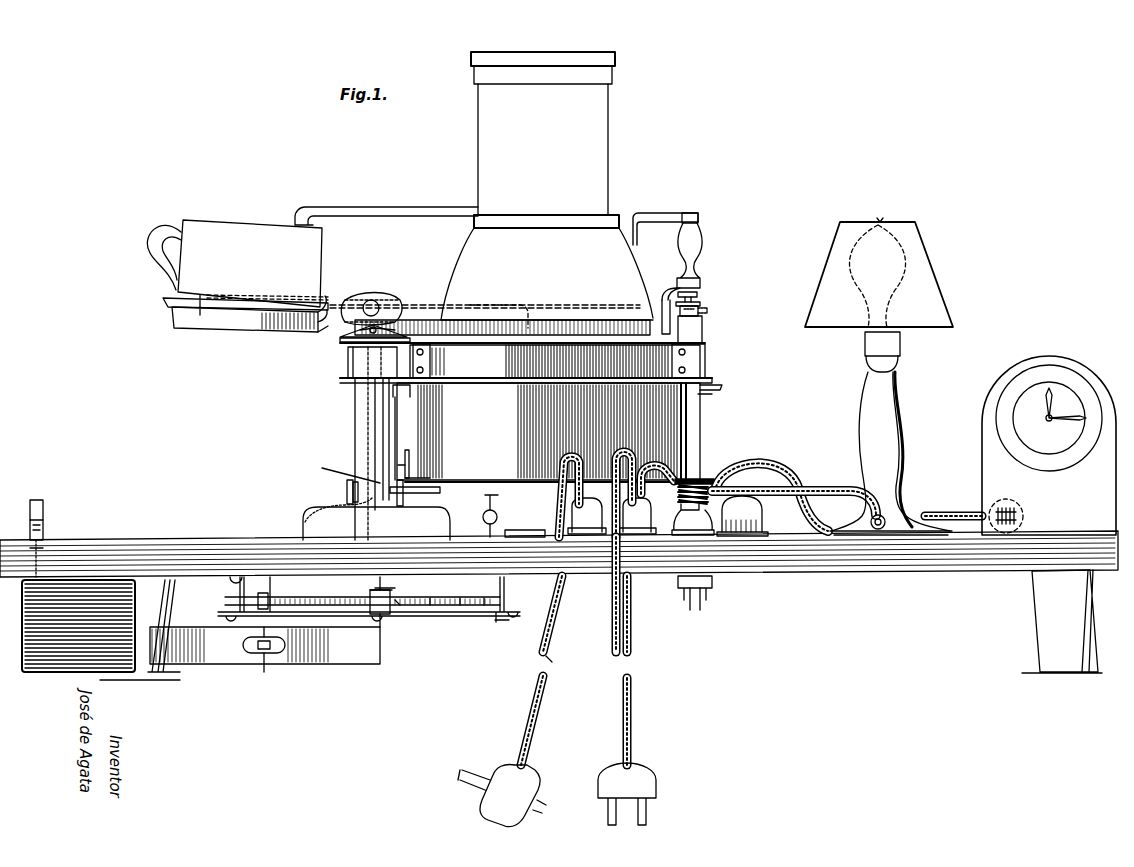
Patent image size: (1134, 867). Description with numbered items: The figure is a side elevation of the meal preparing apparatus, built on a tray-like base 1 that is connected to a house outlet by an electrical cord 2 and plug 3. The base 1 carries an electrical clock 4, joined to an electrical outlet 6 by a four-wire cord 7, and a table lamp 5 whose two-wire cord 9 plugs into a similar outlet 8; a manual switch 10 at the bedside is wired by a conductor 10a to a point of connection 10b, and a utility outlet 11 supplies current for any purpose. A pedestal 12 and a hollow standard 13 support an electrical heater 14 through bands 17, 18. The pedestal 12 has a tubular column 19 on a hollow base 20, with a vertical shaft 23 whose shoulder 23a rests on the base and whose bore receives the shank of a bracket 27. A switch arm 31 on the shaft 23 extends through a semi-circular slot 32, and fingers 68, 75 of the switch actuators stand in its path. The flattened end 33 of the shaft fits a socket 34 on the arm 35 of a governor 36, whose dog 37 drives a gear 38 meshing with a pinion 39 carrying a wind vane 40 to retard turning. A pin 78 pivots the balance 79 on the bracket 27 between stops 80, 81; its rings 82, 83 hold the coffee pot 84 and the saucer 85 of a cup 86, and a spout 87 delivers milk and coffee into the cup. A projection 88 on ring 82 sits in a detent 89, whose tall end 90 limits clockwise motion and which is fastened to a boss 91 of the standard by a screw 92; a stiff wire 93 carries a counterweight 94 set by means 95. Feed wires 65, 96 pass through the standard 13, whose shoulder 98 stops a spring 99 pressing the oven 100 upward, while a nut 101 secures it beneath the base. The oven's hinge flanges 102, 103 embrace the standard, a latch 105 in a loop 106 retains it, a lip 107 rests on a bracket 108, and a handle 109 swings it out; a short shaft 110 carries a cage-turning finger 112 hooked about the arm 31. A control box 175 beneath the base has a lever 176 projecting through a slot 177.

The base 1 is at (138, 550).
The electrical cord 2 is at (622, 595).
The plug 3 is at (648, 772).
The electrical clock 4 is at (990, 475).
The table lamp 5 is at (892, 336).
The electrical outlet 6 is at (766, 528).
The 4-wire cord 7 is at (830, 522).
The electrical outlet 8 is at (648, 535).
The 2-wire cord 9 is at (866, 492).
The manual switch 10 is at (522, 778).
The conductor 10a is at (546, 684).
The point of connection 10b is at (585, 535).
The utility outlet 11 is at (528, 533).
The pedestal 12 is at (348, 431).
The standard 13 is at (700, 430).
The electrical heater 14 is at (690, 348).
The band 17 is at (350, 372).
The band 18 is at (696, 360).
The tubular column 19 is at (354, 412).
The hollow base 20 is at (321, 507).
The vertical shaft 23 is at (366, 392).
The shoulder 23a is at (305, 522).
The bracket 27 is at (348, 344).
The switch arm 31 is at (440, 490).
The semi-circular slot 32 is at (340, 475).
The flattened end 33 is at (378, 590).
The socket 34 is at (388, 594).
The arm 35 is at (432, 606).
The governor 36 is at (398, 607).
The dog 37 is at (486, 606).
The gear 38 is at (462, 606).
The pinion 39 is at (268, 597).
The wind vane 40 is at (312, 655).
The feed wire 65 is at (690, 600).
The finger 68 is at (404, 502).
The finger 75 is at (347, 488).
The pin 78 is at (342, 338).
The balance 79 is at (458, 328).
The stop 80 is at (395, 330).
The stop 81 is at (352, 335).
The ring 82 is at (688, 282).
The ring 83 is at (174, 318).
The coffee pot 84 is at (640, 238).
The saucer 85 is at (168, 302).
The cup 86 is at (190, 268).
The spout 87 is at (370, 198).
The projection 88 is at (704, 310).
The detent 89 is at (698, 294).
The tall end 90 is at (670, 303).
The boss 91 is at (702, 330).
The screw 92 is at (700, 304).
The stiff wire 93 is at (500, 305).
The counterweight 94 is at (368, 297).
The setting means 95 is at (378, 300).
The feed wire 96 is at (700, 602).
The shoulder 98 is at (700, 528).
The spring 99 is at (705, 480).
The oven 100 is at (690, 414).
The nut 101 is at (735, 535).
The hinge flange 102 is at (708, 378).
The hinge flange 103 is at (712, 480).
The latch 105 is at (722, 387).
The loop 106 is at (712, 394).
The lip 107 is at (405, 388).
The bracket 108 is at (400, 395).
The handle 109 is at (498, 515).
The short shaft 110 is at (410, 452).
The cage-turning finger 112 is at (410, 468).
The control box 175 is at (100, 622).
The lever 176 is at (45, 500).
The slot 177 is at (45, 545).